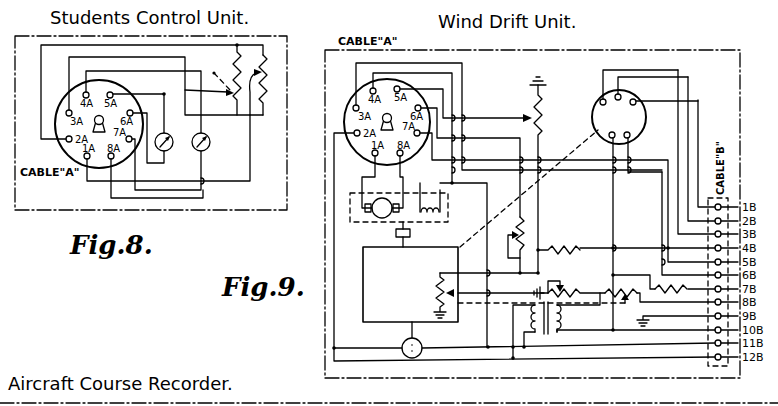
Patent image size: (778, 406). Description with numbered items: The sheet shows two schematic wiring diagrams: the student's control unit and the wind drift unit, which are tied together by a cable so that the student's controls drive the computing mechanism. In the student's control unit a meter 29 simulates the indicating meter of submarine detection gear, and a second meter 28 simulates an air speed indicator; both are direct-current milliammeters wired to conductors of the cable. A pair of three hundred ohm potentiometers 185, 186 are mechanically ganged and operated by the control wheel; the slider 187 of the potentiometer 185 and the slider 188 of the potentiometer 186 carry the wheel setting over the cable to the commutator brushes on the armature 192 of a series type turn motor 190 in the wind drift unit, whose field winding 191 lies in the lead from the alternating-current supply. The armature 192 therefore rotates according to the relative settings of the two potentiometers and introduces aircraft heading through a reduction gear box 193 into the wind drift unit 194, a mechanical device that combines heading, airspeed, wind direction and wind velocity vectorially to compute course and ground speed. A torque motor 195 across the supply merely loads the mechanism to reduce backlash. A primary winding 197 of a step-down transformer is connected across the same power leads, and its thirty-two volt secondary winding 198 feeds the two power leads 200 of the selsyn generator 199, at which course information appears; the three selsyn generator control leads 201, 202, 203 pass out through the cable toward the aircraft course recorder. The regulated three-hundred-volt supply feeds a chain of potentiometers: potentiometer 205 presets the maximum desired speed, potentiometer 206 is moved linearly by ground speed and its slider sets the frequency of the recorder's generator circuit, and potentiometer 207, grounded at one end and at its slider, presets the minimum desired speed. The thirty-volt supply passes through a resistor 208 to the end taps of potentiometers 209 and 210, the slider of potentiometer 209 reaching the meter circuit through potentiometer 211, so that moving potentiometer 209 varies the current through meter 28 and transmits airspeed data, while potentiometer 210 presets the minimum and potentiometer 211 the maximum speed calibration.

In FIG. 8, the meter 28 is at (168, 148).
In FIG. 8, the meter 29 is at (210, 143).
In FIG. 8, the potentiometer 185 is at (223, 80).
In FIG. 8, the potentiometer 186 is at (269, 60).
In FIG. 8, the slider 187 is at (218, 93).
In FIG. 8, the slider 188 is at (270, 86).
In FIG. 9, the turn motor 190 is at (359, 222).
In FIG. 9, the field winding 191 is at (430, 197).
In FIG. 9, the armature 192 is at (382, 208).
In FIG. 9, the reduction gear box 193 is at (394, 234).
In FIG. 9, the wind drift unit 194 is at (410, 284).
In FIG. 9, the torque motor 195 is at (378, 340).
In FIG. 9, the primary winding 197 is at (525, 322).
In FIG. 9, the secondary winding 198 is at (578, 312).
In FIG. 9, the selsyn generator 199 is at (619, 117).
In FIG. 9, the power leads 200 is at (614, 201).
In FIG. 9, the selsyn generator control lead 201 is at (649, 70).
In FIG. 9, the selsyn generator control lead 202 is at (689, 81).
In FIG. 9, the selsyn generator control lead 203 is at (698, 116).
In FIG. 9, the potentiometer 205 is at (667, 286).
In FIG. 9, the potentiometer 206 is at (622, 295).
In FIG. 9, the potentiometer 207 is at (569, 287).
In FIG. 9, the resistor 208 is at (559, 242).
In FIG. 9, the potentiometer 209 is at (481, 295).
In FIG. 9, the potentiometer 210 is at (550, 175).
In FIG. 9, the potentiometer 211 is at (510, 245).